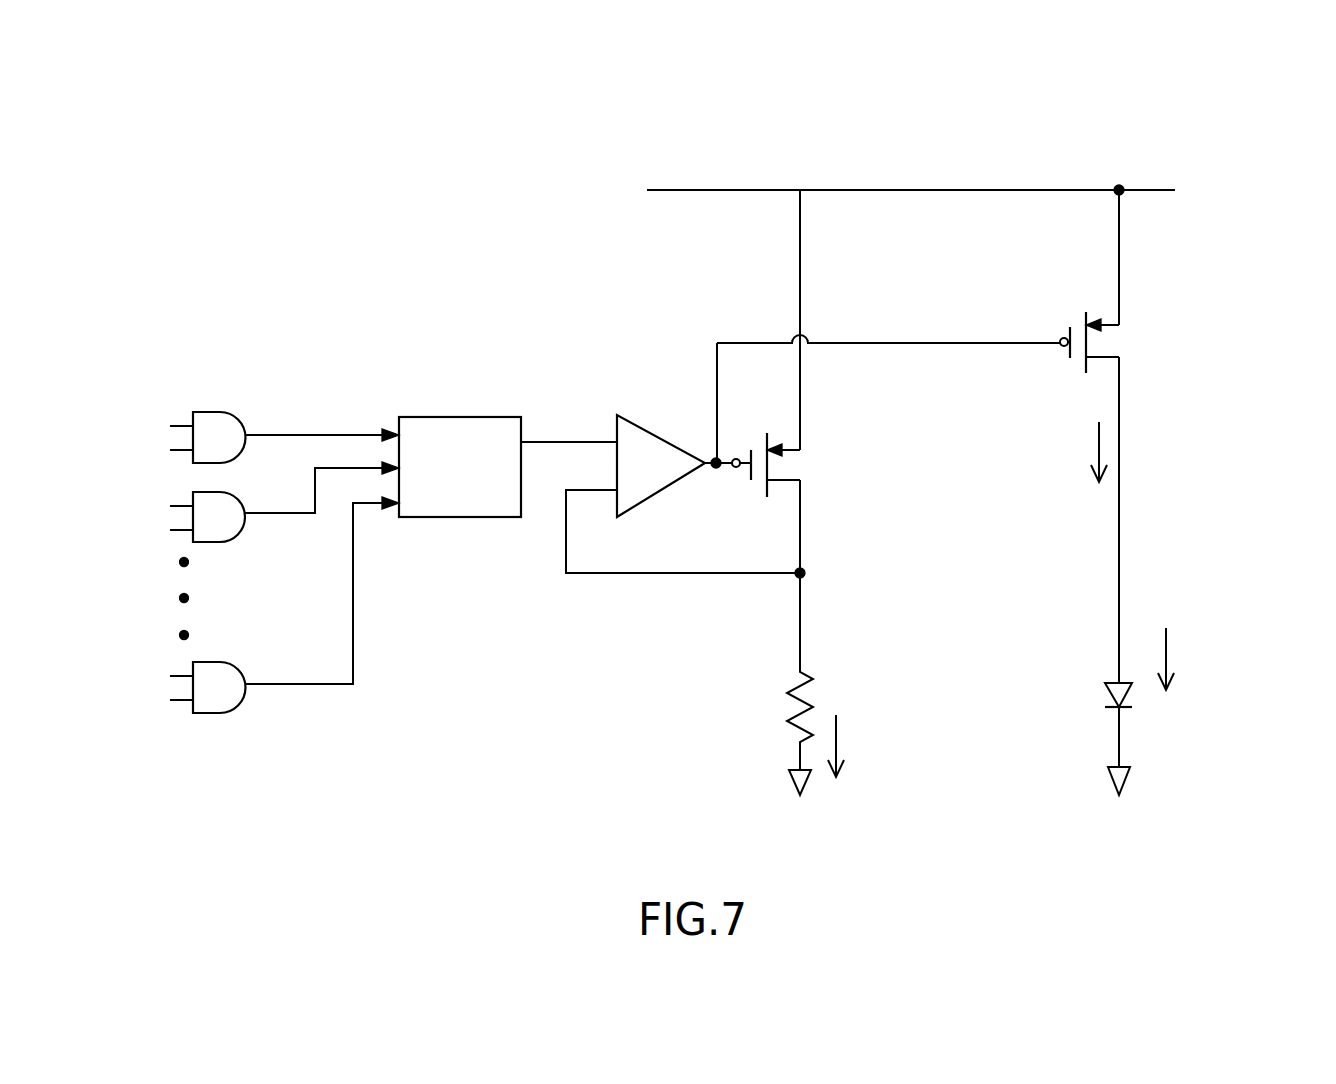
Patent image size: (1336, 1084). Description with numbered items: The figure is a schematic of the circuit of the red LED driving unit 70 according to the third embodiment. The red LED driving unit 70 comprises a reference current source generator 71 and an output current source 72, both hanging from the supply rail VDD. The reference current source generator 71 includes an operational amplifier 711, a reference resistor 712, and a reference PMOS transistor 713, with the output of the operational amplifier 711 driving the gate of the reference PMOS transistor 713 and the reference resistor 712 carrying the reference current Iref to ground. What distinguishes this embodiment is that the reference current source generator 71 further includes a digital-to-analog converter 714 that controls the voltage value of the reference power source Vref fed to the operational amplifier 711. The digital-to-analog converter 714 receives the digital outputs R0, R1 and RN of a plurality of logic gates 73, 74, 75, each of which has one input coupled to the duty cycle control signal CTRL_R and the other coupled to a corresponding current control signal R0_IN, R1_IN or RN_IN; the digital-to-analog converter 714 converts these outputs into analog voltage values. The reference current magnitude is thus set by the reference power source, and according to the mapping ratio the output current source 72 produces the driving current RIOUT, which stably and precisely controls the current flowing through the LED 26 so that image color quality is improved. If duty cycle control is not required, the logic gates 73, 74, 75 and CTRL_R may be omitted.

The red LED driving unit 70 is at (1180, 174).
The reference current source generator 71 is at (677, 327).
The output current source 72 is at (1086, 313).
The logic gate 73 is at (209, 411).
The logic gate 74 is at (223, 542).
The logic gate 75 is at (220, 713).
The operational amplifier 711 is at (639, 421).
The reference resistor 712 is at (813, 682).
The reference PMOS transistor 713 is at (765, 486).
The digital-to-analog converter 714 is at (466, 517).
The LED 26 is at (1107, 698).